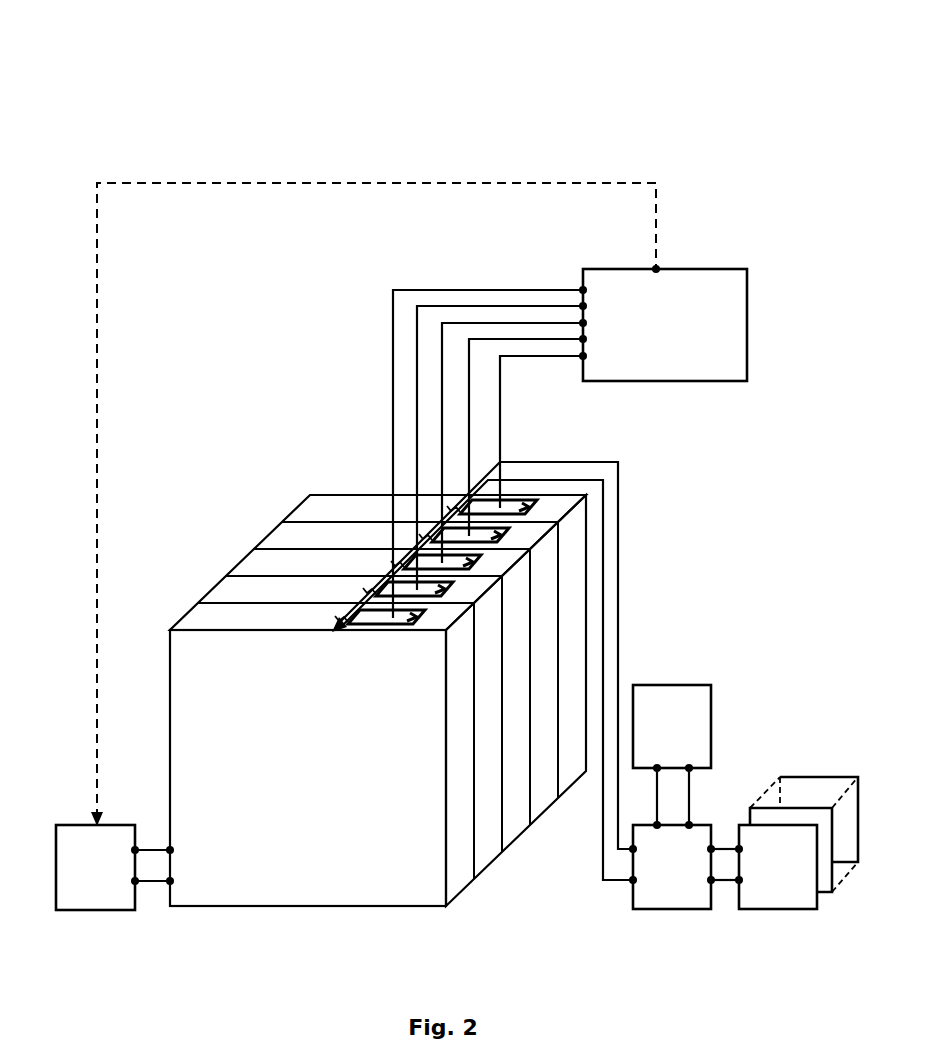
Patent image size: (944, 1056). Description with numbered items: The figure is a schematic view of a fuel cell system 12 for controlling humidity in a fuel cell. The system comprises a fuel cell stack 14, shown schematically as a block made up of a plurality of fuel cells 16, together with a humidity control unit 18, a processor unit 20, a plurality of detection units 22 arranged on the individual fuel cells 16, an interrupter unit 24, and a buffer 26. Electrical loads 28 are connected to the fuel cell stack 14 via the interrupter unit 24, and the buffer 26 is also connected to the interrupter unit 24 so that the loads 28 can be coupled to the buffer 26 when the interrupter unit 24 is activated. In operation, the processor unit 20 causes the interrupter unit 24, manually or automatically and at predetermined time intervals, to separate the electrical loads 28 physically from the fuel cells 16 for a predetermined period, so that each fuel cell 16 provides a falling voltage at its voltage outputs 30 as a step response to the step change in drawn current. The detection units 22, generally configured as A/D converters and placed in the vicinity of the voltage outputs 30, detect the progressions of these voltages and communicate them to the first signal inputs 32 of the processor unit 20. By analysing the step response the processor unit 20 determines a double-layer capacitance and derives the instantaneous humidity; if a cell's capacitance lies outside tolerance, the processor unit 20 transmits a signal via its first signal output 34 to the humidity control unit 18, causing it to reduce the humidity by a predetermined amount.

The fuel cell system 12 is at (471, 118).
The fuel cell stack 14 is at (295, 437).
The fuel cells 16 is at (196, 619).
The humidity control unit 18 is at (95, 893).
The processor unit 20 is at (720, 305).
The detection units 22 is at (530, 510).
The interrupter unit 24 is at (673, 893).
The buffer 26 is at (676, 693).
The electrical loads 28 is at (813, 755).
The voltage outputs 30 is at (336, 630).
The first signal inputs 32 is at (575, 265).
The first signal output 34 is at (665, 263).